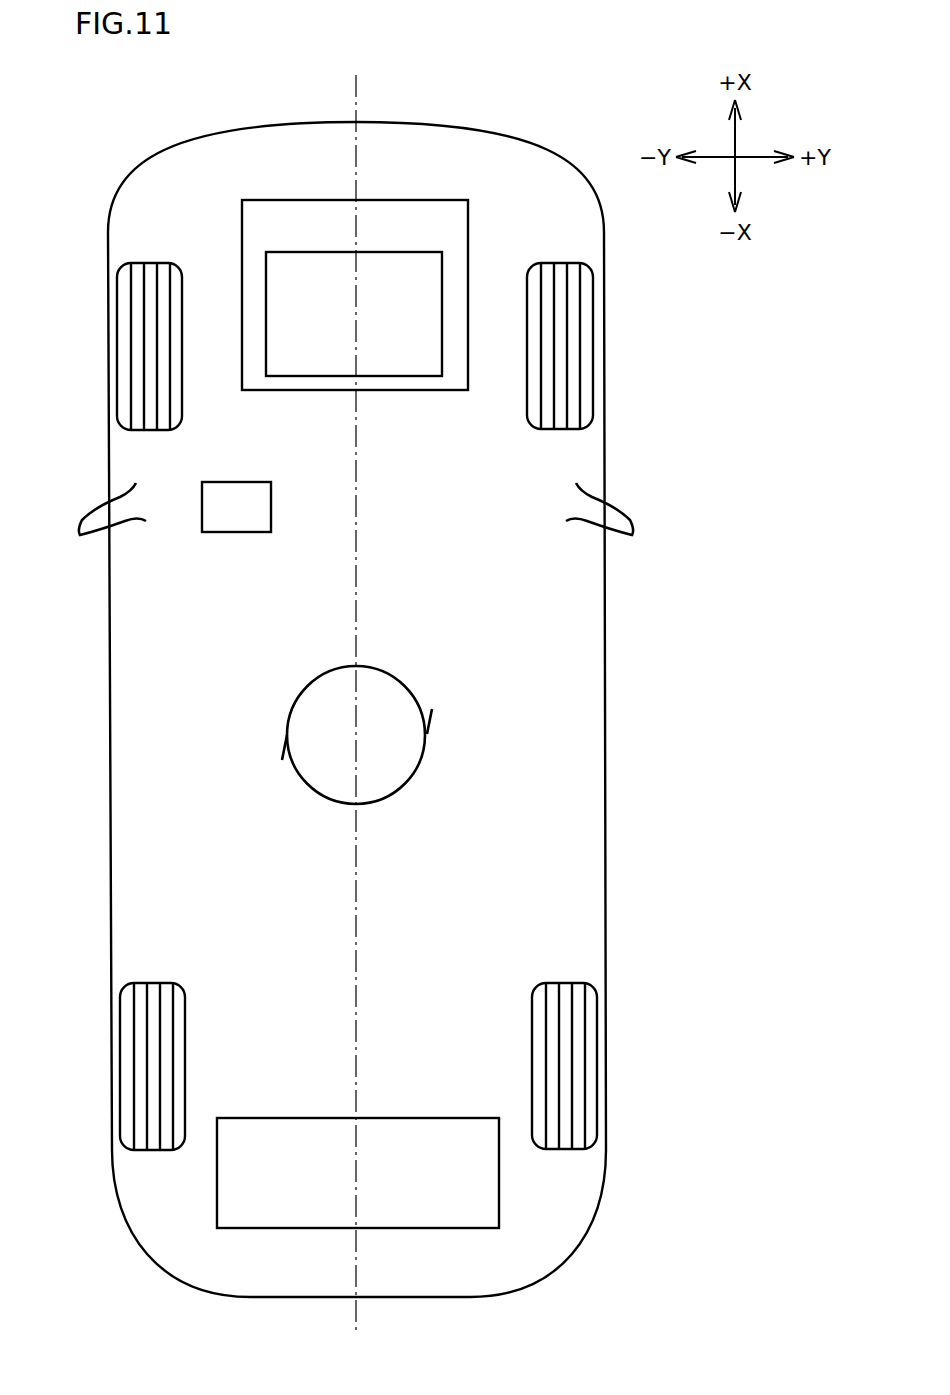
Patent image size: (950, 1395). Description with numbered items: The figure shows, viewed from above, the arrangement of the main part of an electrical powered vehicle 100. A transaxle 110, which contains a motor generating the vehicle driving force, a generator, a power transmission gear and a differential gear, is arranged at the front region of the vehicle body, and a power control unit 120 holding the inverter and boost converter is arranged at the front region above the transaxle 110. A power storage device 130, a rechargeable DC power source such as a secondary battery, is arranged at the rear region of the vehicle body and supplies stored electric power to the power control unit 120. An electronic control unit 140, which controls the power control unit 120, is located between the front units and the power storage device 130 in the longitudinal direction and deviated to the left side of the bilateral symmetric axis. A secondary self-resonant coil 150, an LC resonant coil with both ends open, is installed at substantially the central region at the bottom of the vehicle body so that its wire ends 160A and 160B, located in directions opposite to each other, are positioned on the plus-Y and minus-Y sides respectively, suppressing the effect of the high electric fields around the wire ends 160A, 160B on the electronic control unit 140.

The electrical powered vehicle 100 is at (108, 706).
The transaxle 110 is at (408, 199).
The power control unit 120 is at (428, 250).
The power storage device 130 is at (455, 1117).
The electronic control unit 140 is at (235, 533).
The secondary self-resonant coil 150 is at (311, 684).
The wire end 160A is at (454, 691).
The wire end 160B is at (259, 779).